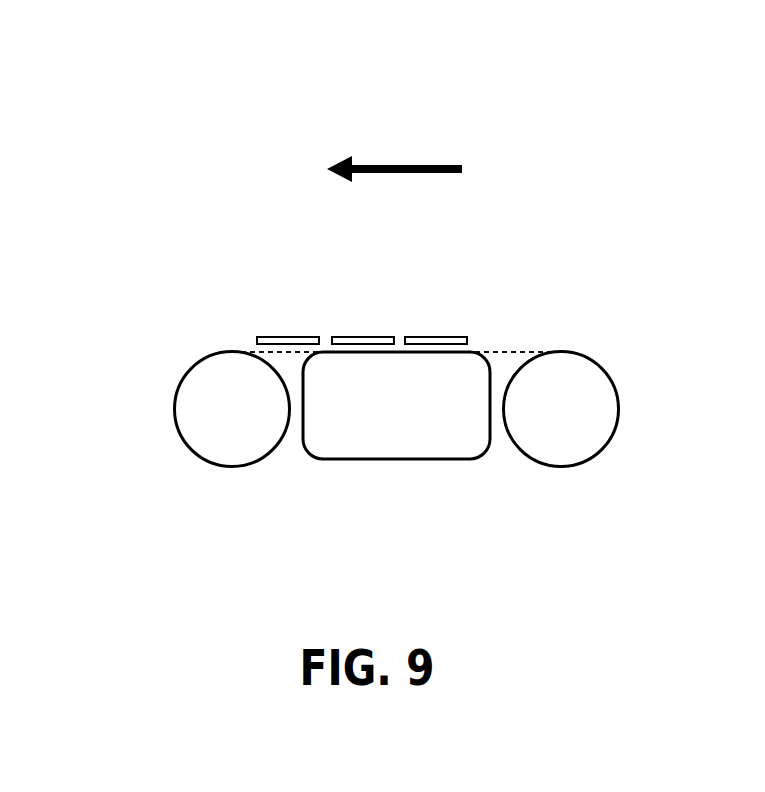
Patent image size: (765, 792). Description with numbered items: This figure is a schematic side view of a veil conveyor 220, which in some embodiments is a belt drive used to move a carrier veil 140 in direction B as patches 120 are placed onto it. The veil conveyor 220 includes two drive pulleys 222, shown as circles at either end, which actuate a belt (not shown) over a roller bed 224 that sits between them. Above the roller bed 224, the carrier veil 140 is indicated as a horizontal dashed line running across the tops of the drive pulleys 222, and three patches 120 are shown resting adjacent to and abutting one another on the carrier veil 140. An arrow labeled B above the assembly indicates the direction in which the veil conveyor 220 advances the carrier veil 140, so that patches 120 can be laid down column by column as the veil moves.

The veil conveyor 220 is at (108, 121).
The drive pulleys 222 is at (233, 463).
The roller bed 224 is at (395, 460).
The patches 120 is at (354, 335).
The carrier veil 140 is at (508, 349).